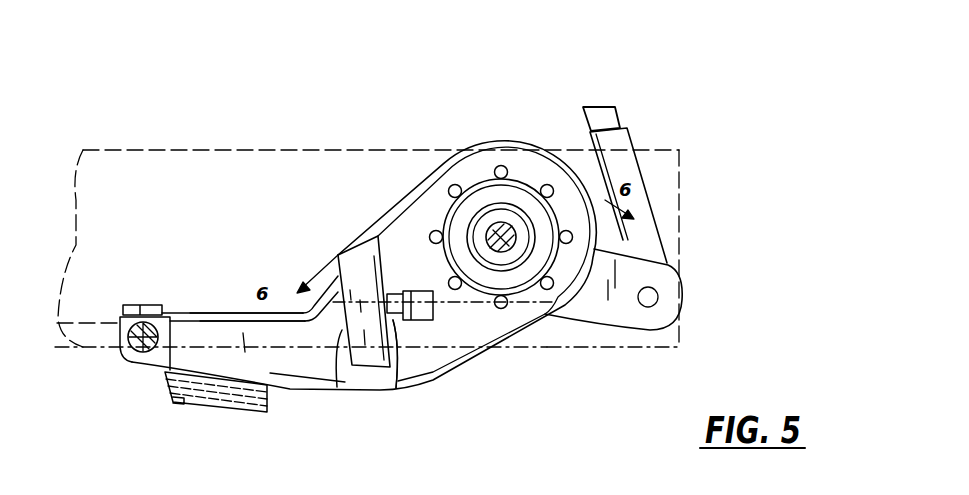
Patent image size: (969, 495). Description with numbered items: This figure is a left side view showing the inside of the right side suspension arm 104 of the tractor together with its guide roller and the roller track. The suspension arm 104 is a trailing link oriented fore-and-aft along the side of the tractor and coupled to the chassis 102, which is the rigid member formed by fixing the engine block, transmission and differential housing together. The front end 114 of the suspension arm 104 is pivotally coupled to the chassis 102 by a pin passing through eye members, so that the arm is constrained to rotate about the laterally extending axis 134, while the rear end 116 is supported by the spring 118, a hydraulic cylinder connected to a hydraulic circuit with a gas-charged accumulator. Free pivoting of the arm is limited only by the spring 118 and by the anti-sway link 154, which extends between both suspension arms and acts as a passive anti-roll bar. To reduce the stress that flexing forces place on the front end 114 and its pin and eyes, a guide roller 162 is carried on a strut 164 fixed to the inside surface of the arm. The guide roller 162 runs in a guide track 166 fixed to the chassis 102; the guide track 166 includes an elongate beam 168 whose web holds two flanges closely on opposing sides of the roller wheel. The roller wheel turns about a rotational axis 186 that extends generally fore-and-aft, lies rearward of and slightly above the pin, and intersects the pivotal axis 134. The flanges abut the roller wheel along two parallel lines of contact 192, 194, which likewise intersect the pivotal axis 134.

The chassis 102 is at (133, 150).
The suspension arm 104 is at (289, 391).
The front end 114 is at (119, 312).
The rear end 116 is at (667, 292).
The spring 118 is at (626, 128).
The axis 134 is at (120, 352).
The anti-sway link 154 is at (212, 403).
The guide roller 162 is at (391, 325).
The strut 164 is at (433, 322).
The guide track 166 is at (352, 330).
The elongate beam 168 is at (383, 237).
The rotational axis 186 is at (552, 348).
The line of contact 192 is at (247, 258).
The line of contact 194 is at (314, 300).